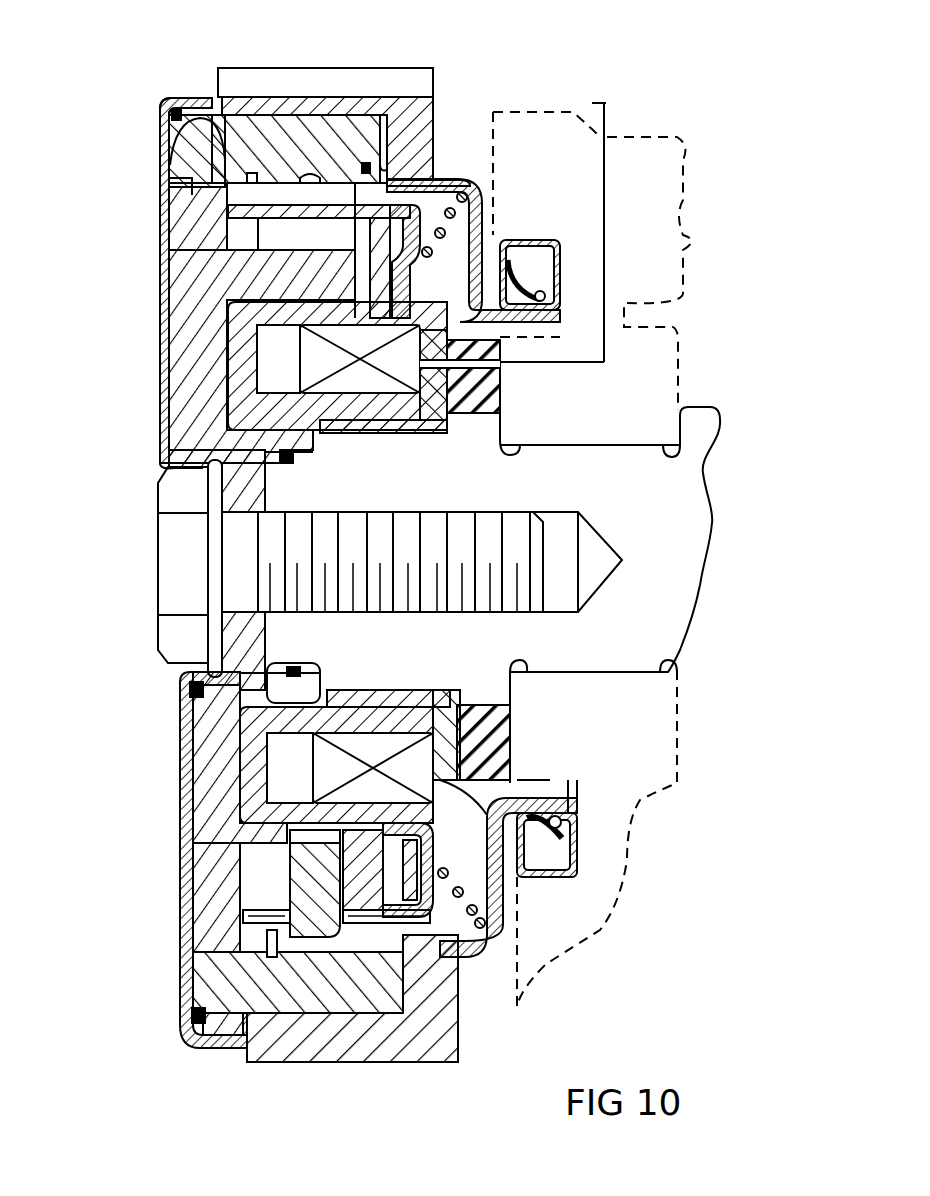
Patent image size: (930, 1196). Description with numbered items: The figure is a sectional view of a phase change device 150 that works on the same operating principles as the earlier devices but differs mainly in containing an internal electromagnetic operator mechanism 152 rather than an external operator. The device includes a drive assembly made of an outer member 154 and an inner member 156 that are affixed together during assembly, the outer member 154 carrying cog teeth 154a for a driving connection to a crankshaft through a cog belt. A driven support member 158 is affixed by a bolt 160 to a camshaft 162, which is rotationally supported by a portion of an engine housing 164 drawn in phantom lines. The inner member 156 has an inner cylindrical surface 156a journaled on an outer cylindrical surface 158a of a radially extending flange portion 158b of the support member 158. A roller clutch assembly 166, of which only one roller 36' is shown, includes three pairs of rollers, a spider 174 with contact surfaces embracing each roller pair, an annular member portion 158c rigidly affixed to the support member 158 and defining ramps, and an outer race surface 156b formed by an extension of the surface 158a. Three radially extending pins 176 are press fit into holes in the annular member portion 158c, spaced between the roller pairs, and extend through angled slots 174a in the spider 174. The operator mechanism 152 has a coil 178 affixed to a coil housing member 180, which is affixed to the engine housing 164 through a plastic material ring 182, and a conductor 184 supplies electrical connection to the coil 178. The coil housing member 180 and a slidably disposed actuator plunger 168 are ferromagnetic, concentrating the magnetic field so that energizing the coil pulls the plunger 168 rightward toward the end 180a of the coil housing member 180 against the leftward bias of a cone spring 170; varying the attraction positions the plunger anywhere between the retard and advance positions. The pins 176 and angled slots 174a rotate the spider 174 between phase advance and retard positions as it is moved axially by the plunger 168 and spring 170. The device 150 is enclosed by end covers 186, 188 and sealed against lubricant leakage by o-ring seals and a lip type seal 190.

The roller 36' is at (264, 104).
The phase change device 150 is at (470, 95).
The internal electromagnetic operator mechanism 152 is at (375, 420).
The outer member 154 is at (330, 1048).
The cog teeth 154a is at (366, 80).
The inner member 156 is at (228, 1003).
The inner cylindrical surface 156a is at (185, 202).
The outer race surface 156b is at (316, 180).
The support member 158 is at (183, 876).
The outer cylindrical surface 158a is at (172, 152).
The radially extending flange portion 158b is at (203, 753).
The annular member portion 158c is at (248, 293).
The bolt 160 is at (178, 577).
The camshaft 162 is at (683, 517).
The engine housing 164 is at (702, 245).
The roller clutch assembly 166 is at (232, 230).
The actuator plunger 168 is at (240, 348).
The cone spring 170 is at (460, 957).
The spider 174 is at (212, 105).
The angled slots 174a is at (220, 960).
The radially extending pins 176 is at (293, 867).
The coil 178 is at (367, 750).
The coil housing member 180 is at (445, 700).
The end of coil housing member 180a is at (513, 783).
The plastic material ring 182 is at (463, 390).
The conductor 184 is at (604, 123).
The end cover 186 is at (170, 382).
The end cover 188 is at (478, 200).
The lip type seal 190 is at (560, 825).